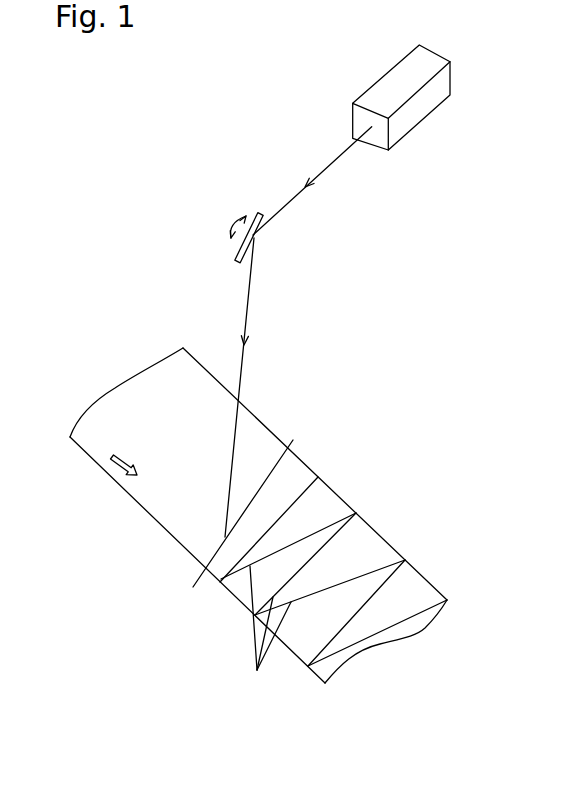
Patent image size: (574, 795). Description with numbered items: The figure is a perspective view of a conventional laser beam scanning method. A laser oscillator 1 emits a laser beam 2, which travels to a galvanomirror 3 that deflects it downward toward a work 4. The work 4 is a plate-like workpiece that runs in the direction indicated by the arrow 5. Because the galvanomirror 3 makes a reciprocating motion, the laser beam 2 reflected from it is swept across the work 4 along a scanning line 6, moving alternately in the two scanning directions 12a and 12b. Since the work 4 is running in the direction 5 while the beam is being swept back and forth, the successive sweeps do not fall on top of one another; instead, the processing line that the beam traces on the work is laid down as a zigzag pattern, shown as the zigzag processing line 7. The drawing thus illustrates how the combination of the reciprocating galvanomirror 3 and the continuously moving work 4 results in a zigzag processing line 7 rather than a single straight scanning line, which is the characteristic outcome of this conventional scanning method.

The laser oscillator 1 is at (438, 93).
The laser beam 2 is at (325, 173).
The galvanomirror 3 is at (261, 213).
The work 4 is at (90, 438).
The running direction of the work 5 is at (111, 458).
The scanning line 6 is at (212, 555).
The zigzag processing line 7 is at (257, 670).
The scanning direction 12a is at (252, 488).
The scanning direction 12b is at (270, 493).